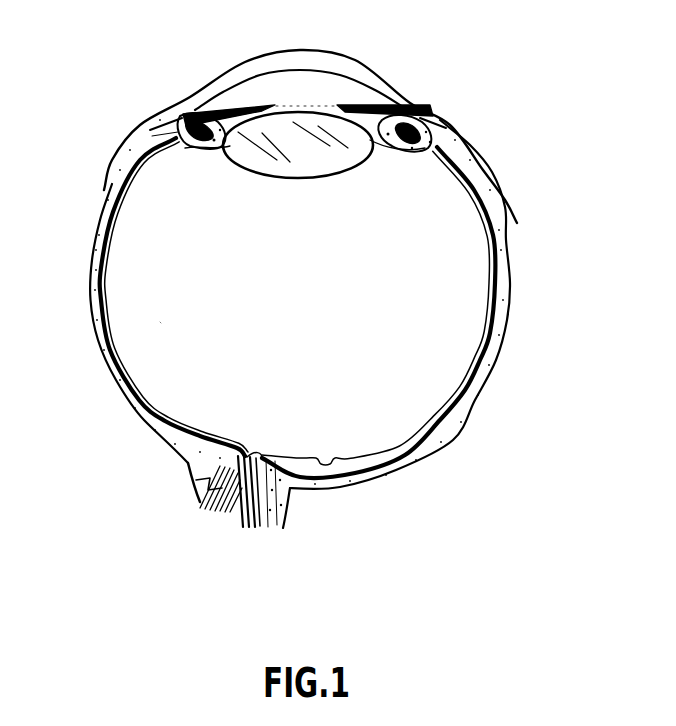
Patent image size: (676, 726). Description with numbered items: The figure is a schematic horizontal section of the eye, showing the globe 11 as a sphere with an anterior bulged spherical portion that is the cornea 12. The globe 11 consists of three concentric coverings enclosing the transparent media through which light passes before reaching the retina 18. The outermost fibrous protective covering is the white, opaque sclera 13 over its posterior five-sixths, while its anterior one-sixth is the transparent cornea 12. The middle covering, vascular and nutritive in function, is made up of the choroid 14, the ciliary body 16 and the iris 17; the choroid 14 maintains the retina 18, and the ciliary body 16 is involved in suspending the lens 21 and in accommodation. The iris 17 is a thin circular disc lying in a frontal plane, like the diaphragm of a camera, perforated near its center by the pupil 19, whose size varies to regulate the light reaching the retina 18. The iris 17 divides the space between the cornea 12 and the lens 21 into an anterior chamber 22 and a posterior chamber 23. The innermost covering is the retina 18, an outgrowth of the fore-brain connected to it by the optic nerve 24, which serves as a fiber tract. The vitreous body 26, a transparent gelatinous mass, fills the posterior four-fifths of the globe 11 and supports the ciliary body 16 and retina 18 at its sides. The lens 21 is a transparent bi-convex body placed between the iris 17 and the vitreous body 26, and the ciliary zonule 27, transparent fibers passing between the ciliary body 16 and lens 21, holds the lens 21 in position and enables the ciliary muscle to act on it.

The globe 11 is at (504, 370).
The cornea 12 is at (377, 70).
The sclera 13 is at (478, 411).
The choroid 14 is at (421, 458).
The ciliary body 16 is at (423, 146).
The iris 17 is at (235, 113).
The retina 18 is at (446, 413).
The pupil 19 is at (295, 106).
The lens 21 is at (318, 158).
The anterior chamber 22 is at (332, 86).
The posterior chamber 23 is at (379, 140).
The optic nerve 24 is at (218, 478).
The vitreous body 26 is at (160, 322).
The ciliary zonule 27 is at (218, 150).